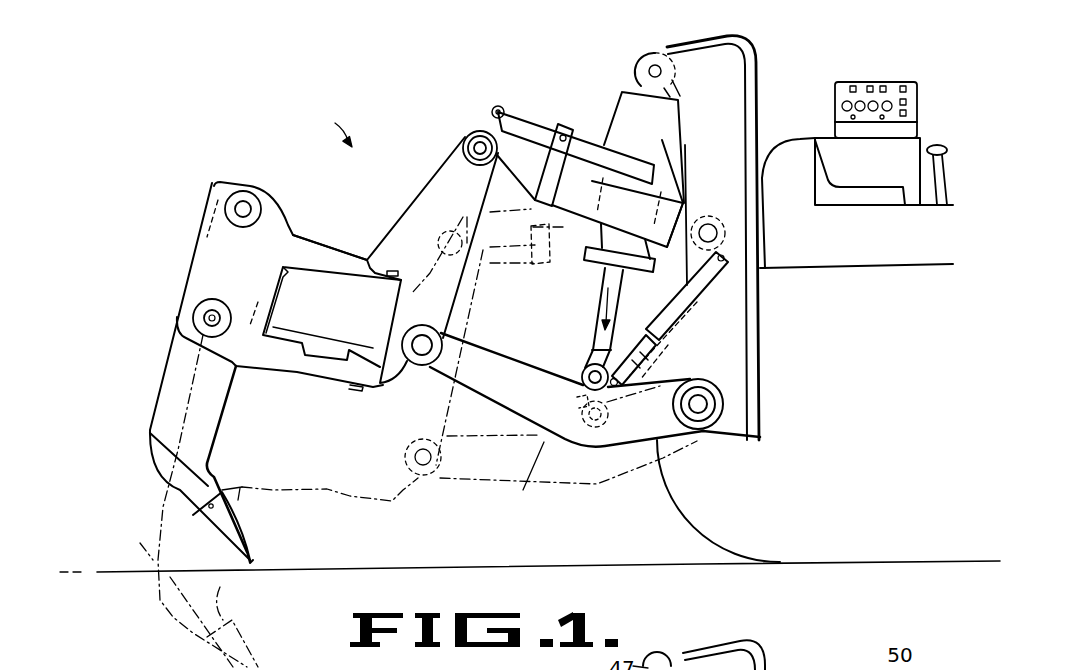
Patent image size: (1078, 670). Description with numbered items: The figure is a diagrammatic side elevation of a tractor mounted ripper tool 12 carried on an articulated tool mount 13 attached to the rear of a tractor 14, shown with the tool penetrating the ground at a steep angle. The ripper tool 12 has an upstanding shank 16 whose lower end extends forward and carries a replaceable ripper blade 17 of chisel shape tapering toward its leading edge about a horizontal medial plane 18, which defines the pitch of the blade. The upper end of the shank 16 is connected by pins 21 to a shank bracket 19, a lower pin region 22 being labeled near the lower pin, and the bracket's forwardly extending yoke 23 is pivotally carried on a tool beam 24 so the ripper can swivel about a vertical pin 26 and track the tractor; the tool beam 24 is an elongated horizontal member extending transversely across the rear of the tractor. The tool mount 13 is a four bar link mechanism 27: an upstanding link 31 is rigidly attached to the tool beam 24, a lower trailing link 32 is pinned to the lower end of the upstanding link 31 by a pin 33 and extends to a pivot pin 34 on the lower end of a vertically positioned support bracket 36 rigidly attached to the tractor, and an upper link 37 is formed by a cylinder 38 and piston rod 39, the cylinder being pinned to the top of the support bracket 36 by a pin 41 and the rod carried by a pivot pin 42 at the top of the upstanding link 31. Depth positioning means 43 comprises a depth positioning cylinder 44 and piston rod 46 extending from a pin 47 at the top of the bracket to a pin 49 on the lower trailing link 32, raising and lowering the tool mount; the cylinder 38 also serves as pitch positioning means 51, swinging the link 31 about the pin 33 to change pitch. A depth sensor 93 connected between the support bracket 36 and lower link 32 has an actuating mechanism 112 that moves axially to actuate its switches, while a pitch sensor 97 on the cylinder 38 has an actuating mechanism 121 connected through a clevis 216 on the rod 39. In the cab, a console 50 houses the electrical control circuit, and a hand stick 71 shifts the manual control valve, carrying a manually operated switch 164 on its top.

The ripper tool 12 is at (178, 497).
The articulated tool mount 13 is at (328, 123).
The tractor 14 is at (707, 527).
The shank 16 is at (163, 377).
The ripper blade 17 is at (244, 538).
The horizontal medial plane 18 is at (264, 580).
The shank bracket 19 is at (198, 252).
The pins 21 is at (236, 206).
The lower pivot pin 22 is at (202, 327).
The yoke 23 is at (313, 247).
The tool beam 24 is at (330, 323).
The vertical pin 26 is at (395, 268).
The four bar link mechanism 27 is at (548, 433).
The upstanding link 31 is at (430, 188).
The lower trailing link 32 is at (510, 413).
The pin 33 is at (422, 452).
The pivot pin 34 is at (698, 413).
The support bracket 36 is at (745, 322).
The upper link 37 is at (670, 198).
The cylinder 38 is at (568, 196).
The piston rod 39 is at (512, 168).
The pin 41 is at (710, 223).
The pivot pin 42 is at (477, 146).
The depth positioning means 43 is at (614, 104).
The depth positioning cylinder 44 is at (638, 139).
The piston rod 46 is at (598, 333).
The pin 47 is at (656, 66).
The pin 49 is at (589, 371).
The console 50 is at (877, 83).
The pitch positioning means 51 is at (540, 158).
The hand stick 71 is at (937, 192).
The depth sensor 93 is at (690, 304).
The pitch sensor 97 is at (580, 128).
The actuating mechanism 112 is at (647, 348).
The actuating mechanism 121 is at (528, 113).
The manually operated switch 164 is at (937, 143).
The clevis 216 is at (493, 108).